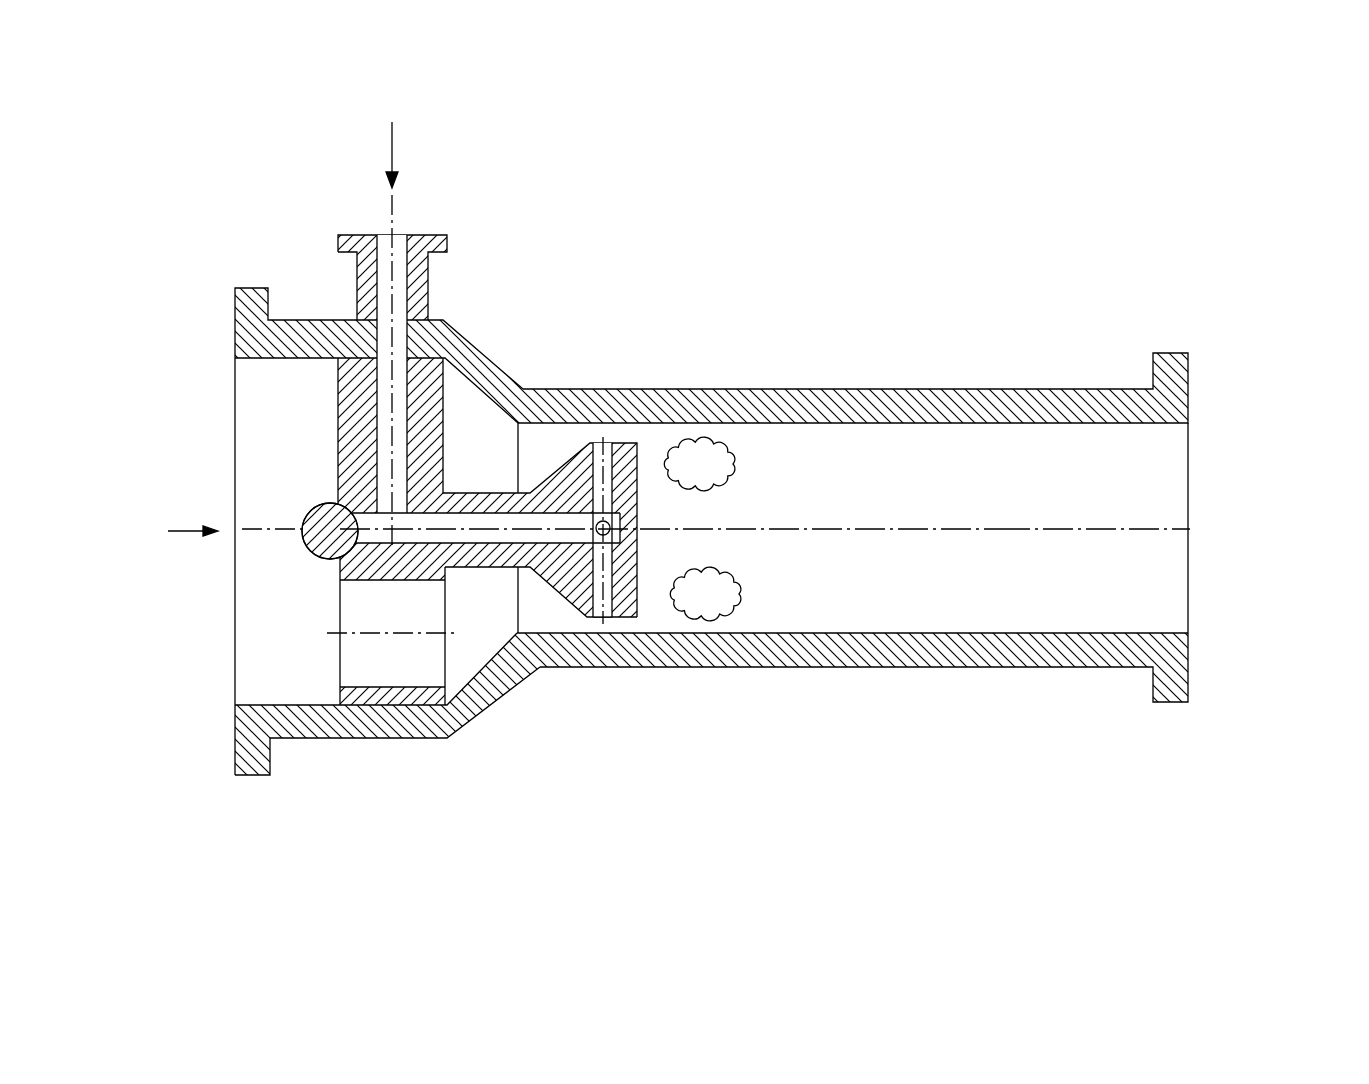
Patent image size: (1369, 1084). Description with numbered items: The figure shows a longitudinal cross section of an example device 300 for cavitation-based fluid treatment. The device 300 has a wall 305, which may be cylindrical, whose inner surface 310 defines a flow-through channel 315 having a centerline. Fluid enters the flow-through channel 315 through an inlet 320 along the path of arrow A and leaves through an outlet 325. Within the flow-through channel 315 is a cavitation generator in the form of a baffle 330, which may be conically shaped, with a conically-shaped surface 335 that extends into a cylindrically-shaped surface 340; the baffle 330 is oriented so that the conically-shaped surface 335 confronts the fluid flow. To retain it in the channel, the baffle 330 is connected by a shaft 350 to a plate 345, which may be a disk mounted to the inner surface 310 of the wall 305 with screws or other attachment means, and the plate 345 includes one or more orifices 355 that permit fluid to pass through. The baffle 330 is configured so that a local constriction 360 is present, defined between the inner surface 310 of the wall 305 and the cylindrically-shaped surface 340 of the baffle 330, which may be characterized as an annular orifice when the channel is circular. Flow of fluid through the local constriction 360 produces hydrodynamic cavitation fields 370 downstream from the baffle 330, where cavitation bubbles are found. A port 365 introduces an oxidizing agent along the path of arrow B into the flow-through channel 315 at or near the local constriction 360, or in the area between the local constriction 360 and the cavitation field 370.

The device 300 is at (882, 144).
The wall 305 is at (927, 548).
The inner surface 310 is at (785, 389).
The flow-through channel 315 is at (952, 577).
The inlet 320 is at (270, 663).
The outlet 325 is at (1155, 460).
The baffle 330 is at (572, 438).
The conically-shaped surface 335 is at (573, 560).
The cylindrically-shaped surface 340 is at (637, 443).
The plate 345 is at (357, 415).
The shaft 350 is at (473, 497).
The orifices 355 is at (383, 648).
The local constriction 360 is at (622, 622).
The port 365 is at (383, 297).
The cavitation fields 370 is at (730, 470).